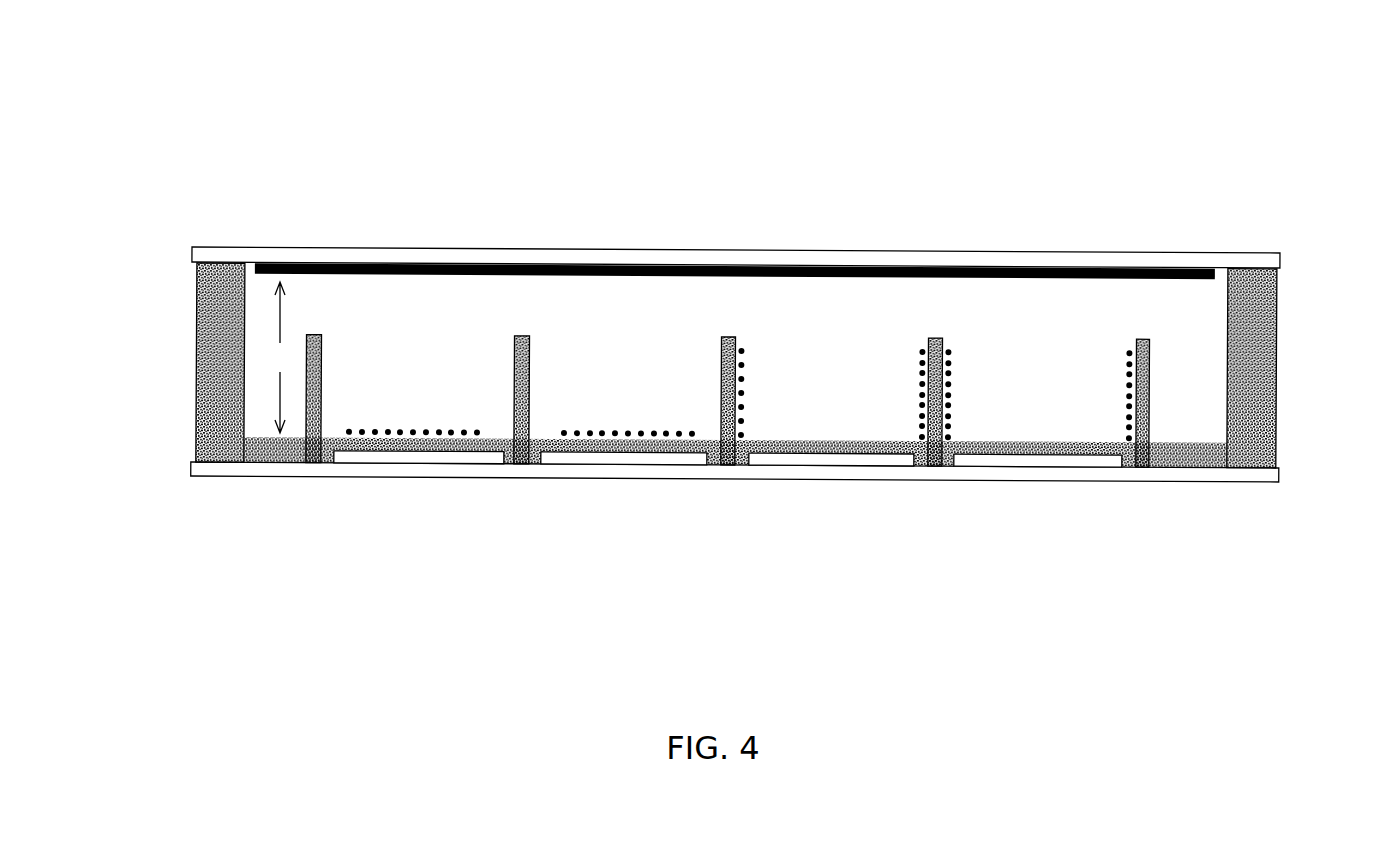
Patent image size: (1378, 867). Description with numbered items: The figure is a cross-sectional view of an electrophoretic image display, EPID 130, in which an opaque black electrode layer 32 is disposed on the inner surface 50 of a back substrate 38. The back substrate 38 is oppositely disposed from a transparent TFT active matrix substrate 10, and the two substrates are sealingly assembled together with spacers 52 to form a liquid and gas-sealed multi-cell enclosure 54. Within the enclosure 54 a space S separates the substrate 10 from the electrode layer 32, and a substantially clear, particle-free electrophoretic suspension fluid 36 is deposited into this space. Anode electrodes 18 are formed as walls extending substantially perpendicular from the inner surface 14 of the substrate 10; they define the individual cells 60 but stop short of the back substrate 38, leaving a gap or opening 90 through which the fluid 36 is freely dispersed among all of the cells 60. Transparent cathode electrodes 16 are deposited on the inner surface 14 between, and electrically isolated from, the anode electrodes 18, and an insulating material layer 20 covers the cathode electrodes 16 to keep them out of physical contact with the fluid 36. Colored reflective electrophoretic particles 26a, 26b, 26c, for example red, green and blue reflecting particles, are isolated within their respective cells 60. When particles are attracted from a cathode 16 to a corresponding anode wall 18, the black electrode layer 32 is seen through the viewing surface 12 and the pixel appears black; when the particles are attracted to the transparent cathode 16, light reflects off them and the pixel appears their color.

The EPID 130 is at (719, 134).
The back substrate 38 is at (277, 240).
The opaque black electrode layer 32 is at (431, 253).
The gap or opening 90 is at (510, 293).
The multi-cell enclosure 54 is at (779, 292).
The spacers 52 is at (183, 312).
The inner surface 14 is at (1212, 453).
The inner surface 50 is at (378, 291).
The electrophoretic suspension fluid 36 is at (650, 311).
The reflective electrophoretic particles 26a is at (422, 418).
The reflective electrophoretic particles 26b is at (623, 416).
The reflective electrophoretic particles 26c is at (749, 380).
The cells 60 is at (1005, 426).
The insulating material layer 20 is at (1173, 464).
The TFT active matrix substrate 10 is at (212, 485).
The cathode electrodes 16 is at (360, 474).
The anode electrodes 18 is at (513, 411).
The viewing surface 12 is at (735, 526).